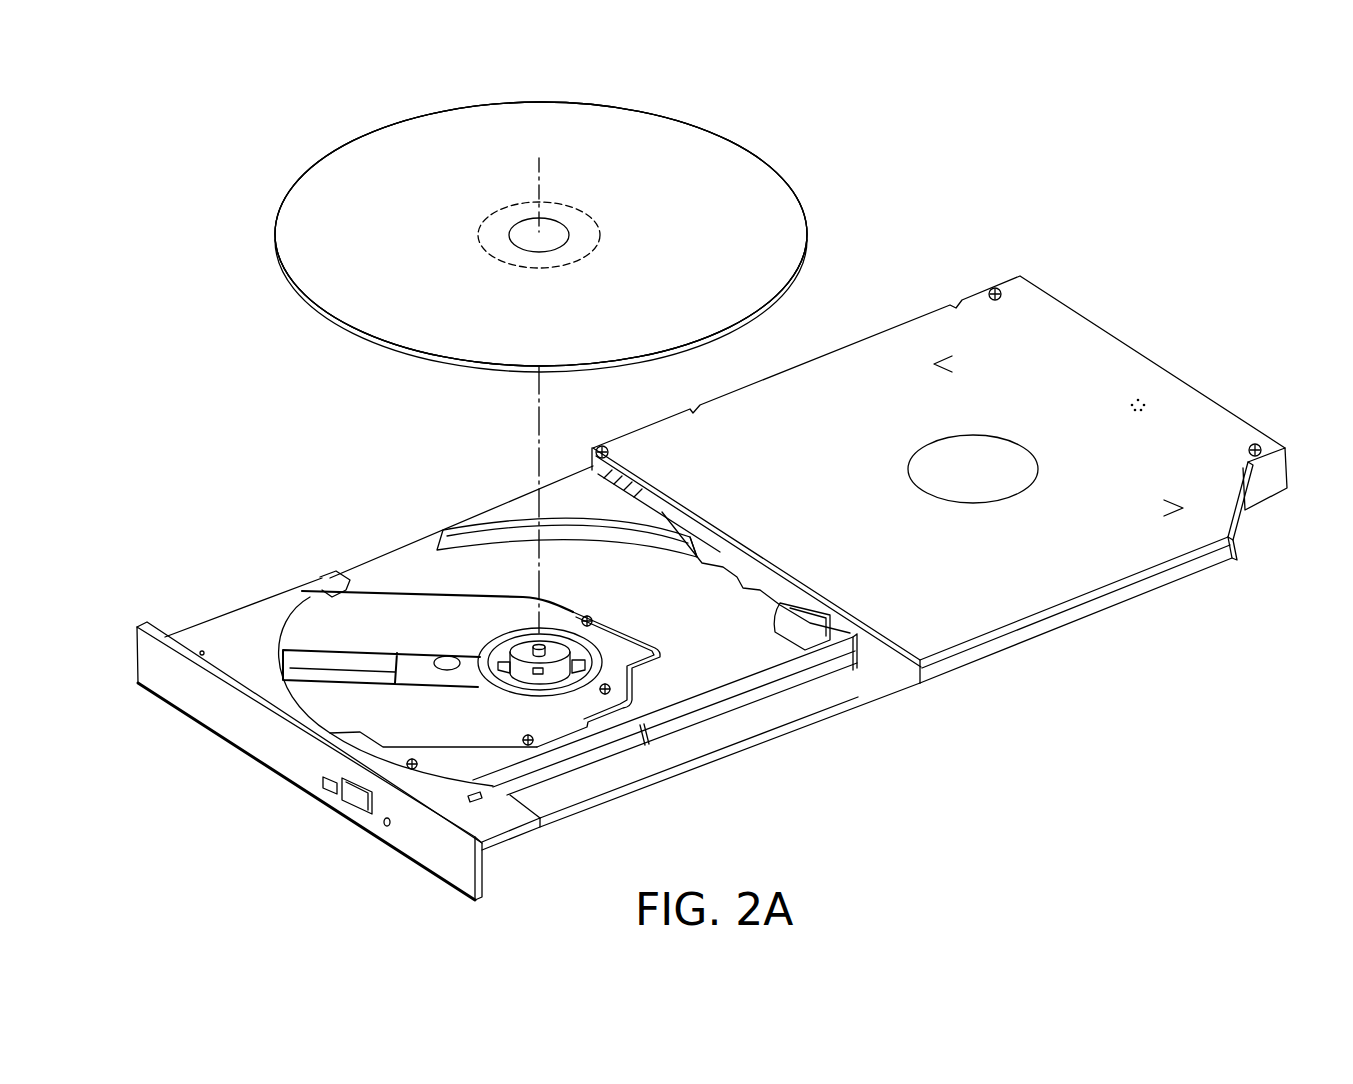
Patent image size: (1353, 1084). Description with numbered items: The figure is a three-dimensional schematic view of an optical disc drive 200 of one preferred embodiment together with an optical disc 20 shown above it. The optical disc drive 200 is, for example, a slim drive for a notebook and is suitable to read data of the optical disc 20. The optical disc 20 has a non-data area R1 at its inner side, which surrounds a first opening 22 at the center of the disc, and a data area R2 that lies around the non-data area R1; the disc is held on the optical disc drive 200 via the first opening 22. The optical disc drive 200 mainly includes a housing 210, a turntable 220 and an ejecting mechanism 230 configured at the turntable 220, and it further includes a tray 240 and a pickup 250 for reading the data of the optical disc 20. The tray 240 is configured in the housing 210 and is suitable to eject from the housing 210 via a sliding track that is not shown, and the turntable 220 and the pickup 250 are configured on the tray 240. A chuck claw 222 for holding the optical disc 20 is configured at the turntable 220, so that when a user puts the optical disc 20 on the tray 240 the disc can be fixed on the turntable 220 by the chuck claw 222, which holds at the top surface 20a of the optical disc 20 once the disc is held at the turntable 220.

The optical disc 20 is at (800, 223).
The top surface 20a is at (752, 178).
The first opening 22 is at (557, 242).
The non-data area R1 is at (490, 233).
The data area R2 is at (318, 235).
The optical disc drive 200 is at (768, 718).
The housing 210 is at (1017, 603).
The turntable 220 is at (557, 652).
The chuck claw 222 is at (538, 674).
The ejecting mechanism 230 is at (580, 668).
The tray 240 is at (224, 611).
The pickup 250 is at (447, 656).